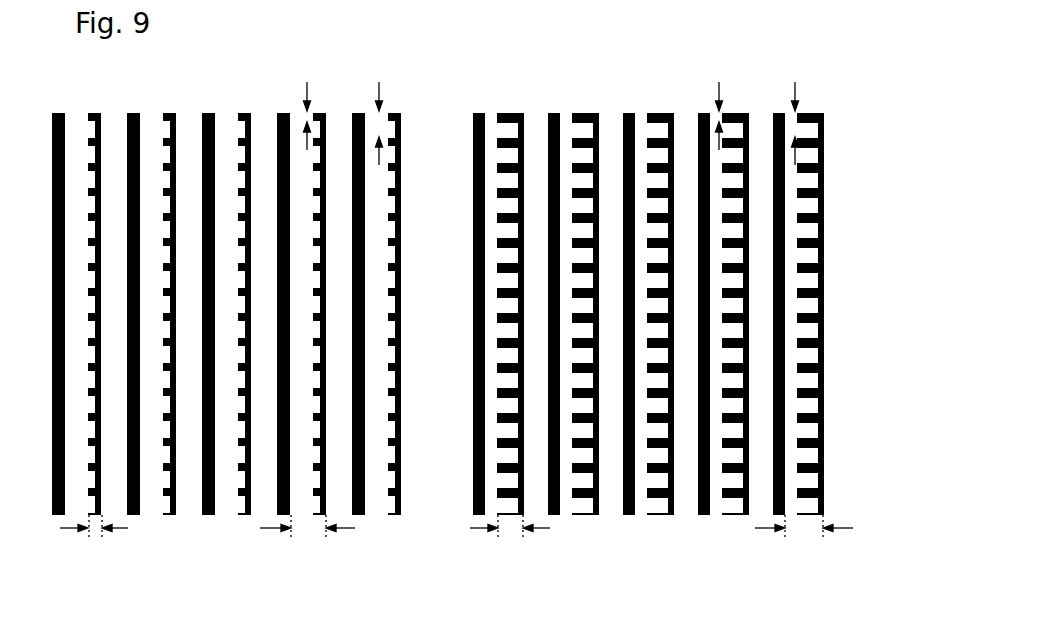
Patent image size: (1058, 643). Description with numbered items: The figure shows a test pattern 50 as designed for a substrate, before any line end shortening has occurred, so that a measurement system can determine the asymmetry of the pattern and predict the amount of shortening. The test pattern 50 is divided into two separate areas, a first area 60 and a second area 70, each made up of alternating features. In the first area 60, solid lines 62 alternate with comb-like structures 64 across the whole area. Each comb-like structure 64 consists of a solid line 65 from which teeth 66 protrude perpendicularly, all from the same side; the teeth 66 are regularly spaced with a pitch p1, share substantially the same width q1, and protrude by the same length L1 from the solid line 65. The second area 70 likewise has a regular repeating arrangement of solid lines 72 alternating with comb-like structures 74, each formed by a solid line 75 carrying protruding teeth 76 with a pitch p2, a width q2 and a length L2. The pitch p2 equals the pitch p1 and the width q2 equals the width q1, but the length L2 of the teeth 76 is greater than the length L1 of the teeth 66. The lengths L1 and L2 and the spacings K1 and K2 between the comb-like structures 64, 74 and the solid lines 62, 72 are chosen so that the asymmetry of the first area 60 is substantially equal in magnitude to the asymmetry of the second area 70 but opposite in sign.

The test pattern 50 is at (452, 351).
The first area 60 is at (226, 341).
The solid lines 62 is at (62, 112).
The comb-like structures 64 is at (105, 122).
The solid line 65 is at (204, 287).
The teeth 66 is at (177, 132).
The second area 70 is at (661, 343).
The solid lines 72 is at (482, 112).
The comb-like structures 74 is at (528, 120).
The solid line 75 is at (623, 287).
The teeth 76 is at (585, 122).
The width q1 is at (307, 118).
The pitch p1 is at (380, 123).
The length of protrusion L1 is at (93, 537).
The spacing K1 is at (305, 533).
The width q2 is at (720, 118).
The pitch p2 is at (798, 123).
The length L2 is at (515, 535).
The spacing K2 is at (802, 535).